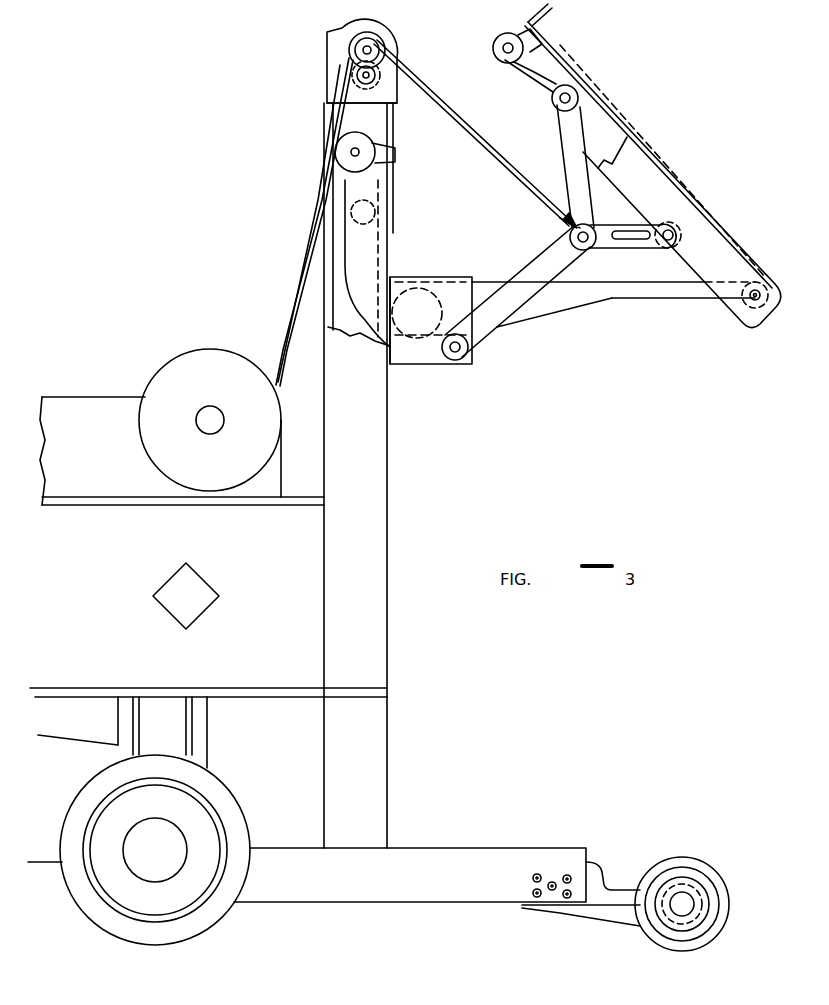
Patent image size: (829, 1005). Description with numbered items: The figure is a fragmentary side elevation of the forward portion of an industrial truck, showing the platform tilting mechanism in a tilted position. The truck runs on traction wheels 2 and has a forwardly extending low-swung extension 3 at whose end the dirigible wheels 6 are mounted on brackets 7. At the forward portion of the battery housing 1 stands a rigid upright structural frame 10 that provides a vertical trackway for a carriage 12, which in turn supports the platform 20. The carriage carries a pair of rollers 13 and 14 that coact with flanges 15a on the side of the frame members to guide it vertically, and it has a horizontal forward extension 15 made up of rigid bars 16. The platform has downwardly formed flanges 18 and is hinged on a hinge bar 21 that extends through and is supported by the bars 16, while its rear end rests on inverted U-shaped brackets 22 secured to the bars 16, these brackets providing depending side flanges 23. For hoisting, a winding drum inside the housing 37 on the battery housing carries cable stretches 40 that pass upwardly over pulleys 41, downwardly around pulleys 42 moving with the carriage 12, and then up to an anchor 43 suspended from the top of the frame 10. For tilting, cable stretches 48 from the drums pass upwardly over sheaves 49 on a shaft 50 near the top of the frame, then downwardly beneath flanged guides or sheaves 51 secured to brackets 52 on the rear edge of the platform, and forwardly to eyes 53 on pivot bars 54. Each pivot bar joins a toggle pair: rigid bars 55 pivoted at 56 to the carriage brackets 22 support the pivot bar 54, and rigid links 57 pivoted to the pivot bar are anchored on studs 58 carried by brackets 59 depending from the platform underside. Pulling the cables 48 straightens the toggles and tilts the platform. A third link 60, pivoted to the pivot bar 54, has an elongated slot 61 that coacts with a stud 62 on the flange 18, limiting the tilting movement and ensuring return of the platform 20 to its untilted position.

The battery housing 1 is at (207, 482).
The traction wheels 2 is at (208, 915).
The low-swung extension 3 is at (434, 898).
The dirigible wheels 6 is at (664, 934).
The brackets 7 is at (596, 916).
The upright structural frame 10 is at (388, 530).
The carriage 12 is at (388, 257).
The roller 13 is at (392, 157).
The roller 14 is at (416, 340).
The horizontal forward extension 15 is at (392, 212).
The flanges 15a is at (343, 329).
The rigid bars 16 is at (571, 306).
The downwardly formed flanges 18 is at (622, 159).
The platform 20 is at (715, 241).
The hinge bar 21 is at (750, 302).
The brackets 22 is at (456, 276).
The depending side flanges 23 is at (437, 352).
The housing 37 is at (166, 390).
The cable stretches 40 is at (320, 196).
The pulleys 41 is at (396, 97).
The pulleys 42 is at (378, 200).
The anchor 43 is at (332, 43).
The cable stretches 48 is at (476, 118).
The sheaves 49 is at (385, 50).
The shaft 50 is at (370, 50).
The flanged guides or sheaves 51 is at (507, 36).
The brackets 52 is at (540, 50).
The eyes 53 is at (566, 229).
The pivot bars 54 is at (587, 248).
The rigid bars 55 is at (532, 270).
The pivot 56 is at (463, 356).
The rigid links 57 is at (566, 150).
The studs 58 is at (556, 98).
The brackets 59 is at (560, 80).
The third link 60 is at (612, 233).
The elongated slot 61 is at (641, 245).
The stud 62 is at (673, 235).